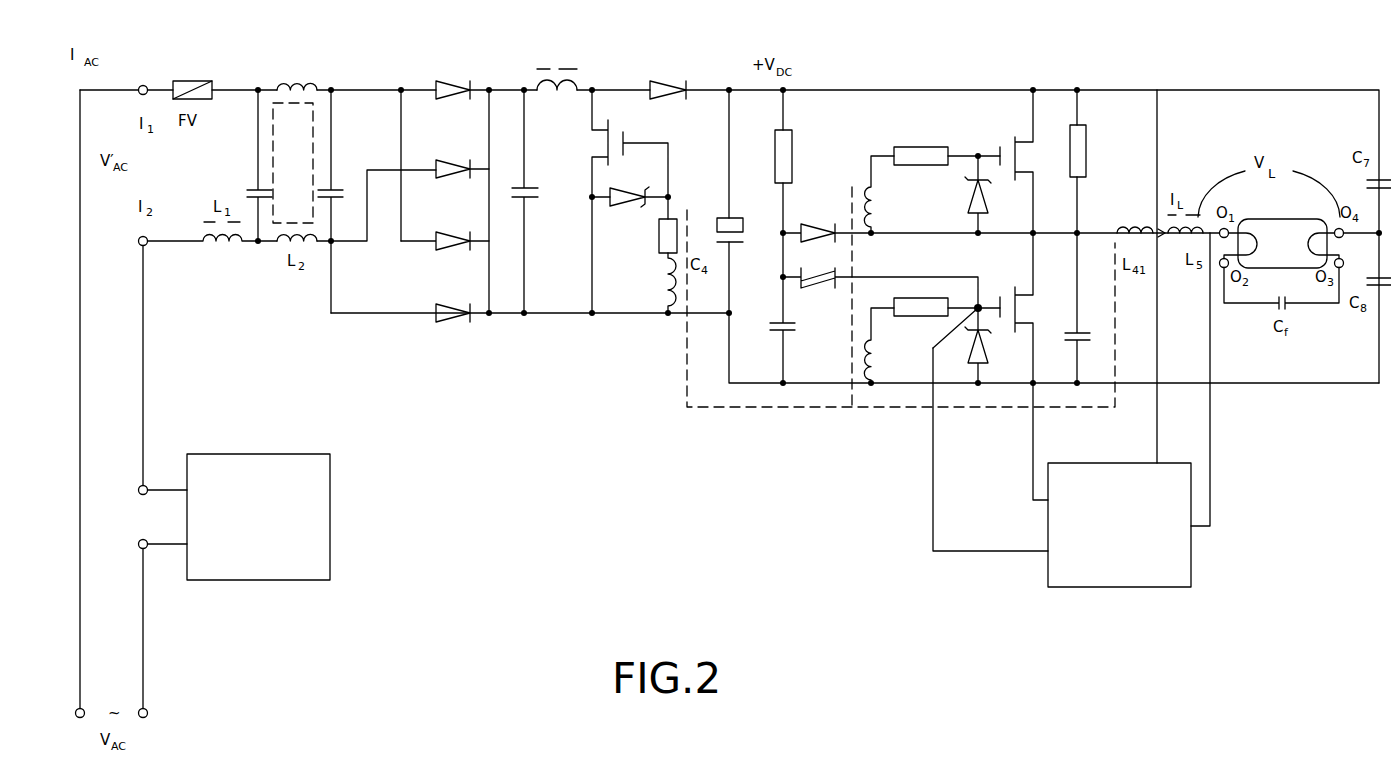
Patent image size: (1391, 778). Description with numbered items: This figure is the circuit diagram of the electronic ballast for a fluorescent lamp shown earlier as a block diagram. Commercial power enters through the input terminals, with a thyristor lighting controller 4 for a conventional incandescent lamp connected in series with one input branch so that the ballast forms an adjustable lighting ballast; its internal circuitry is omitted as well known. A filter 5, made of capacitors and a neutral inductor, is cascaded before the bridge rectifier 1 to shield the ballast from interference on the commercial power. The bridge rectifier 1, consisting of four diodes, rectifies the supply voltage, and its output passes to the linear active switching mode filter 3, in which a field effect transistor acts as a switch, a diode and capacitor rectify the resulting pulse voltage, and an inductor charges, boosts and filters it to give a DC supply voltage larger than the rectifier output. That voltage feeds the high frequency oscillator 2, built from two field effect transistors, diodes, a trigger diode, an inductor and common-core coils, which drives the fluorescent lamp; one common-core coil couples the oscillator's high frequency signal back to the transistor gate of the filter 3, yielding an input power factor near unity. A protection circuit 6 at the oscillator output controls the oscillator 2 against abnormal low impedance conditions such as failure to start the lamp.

The bridge rectifier 1 is at (455, 72).
The high frequency oscillator 2 is at (1043, 72).
The linear active switching mode filter circuit 3 is at (618, 77).
The thyristor lighting controller 4 is at (258, 517).
The filter 5 is at (322, 73).
The protection circuit 6 is at (1062, 467).